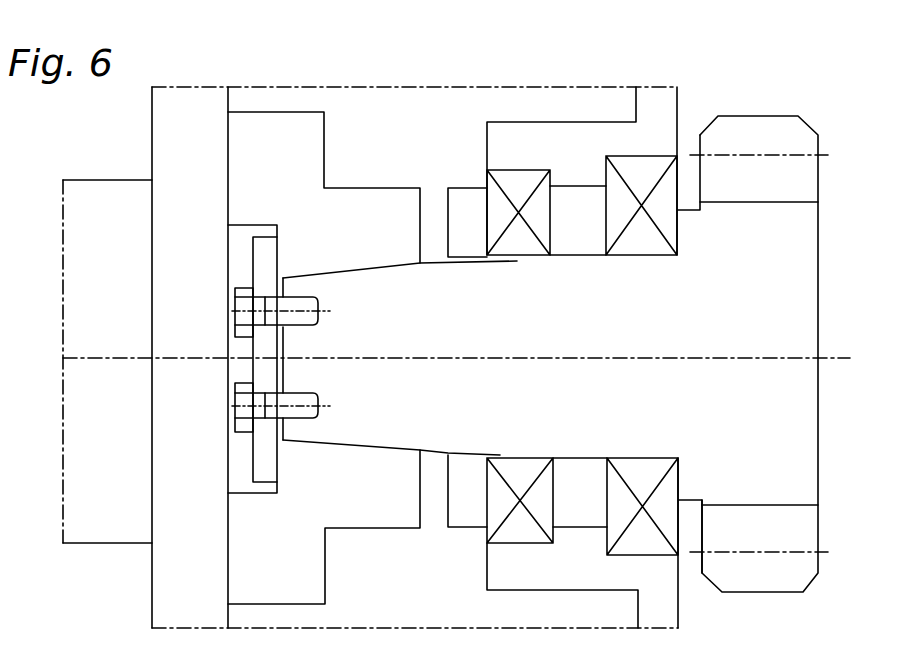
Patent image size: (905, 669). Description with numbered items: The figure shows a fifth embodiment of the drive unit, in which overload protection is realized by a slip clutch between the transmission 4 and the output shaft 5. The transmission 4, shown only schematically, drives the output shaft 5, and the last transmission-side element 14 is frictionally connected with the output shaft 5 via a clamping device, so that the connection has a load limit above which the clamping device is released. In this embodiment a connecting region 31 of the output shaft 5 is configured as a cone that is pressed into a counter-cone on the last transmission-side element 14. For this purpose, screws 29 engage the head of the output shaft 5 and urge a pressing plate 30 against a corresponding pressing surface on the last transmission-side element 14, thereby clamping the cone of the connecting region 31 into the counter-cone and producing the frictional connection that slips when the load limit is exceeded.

The transmission 4 is at (172, 150).
The last transmission-side element 14 is at (275, 120).
The connecting region 31 is at (360, 270).
The pressing plate 30 is at (262, 270).
The screws 29 is at (285, 302).
The output shaft 5 is at (802, 325).